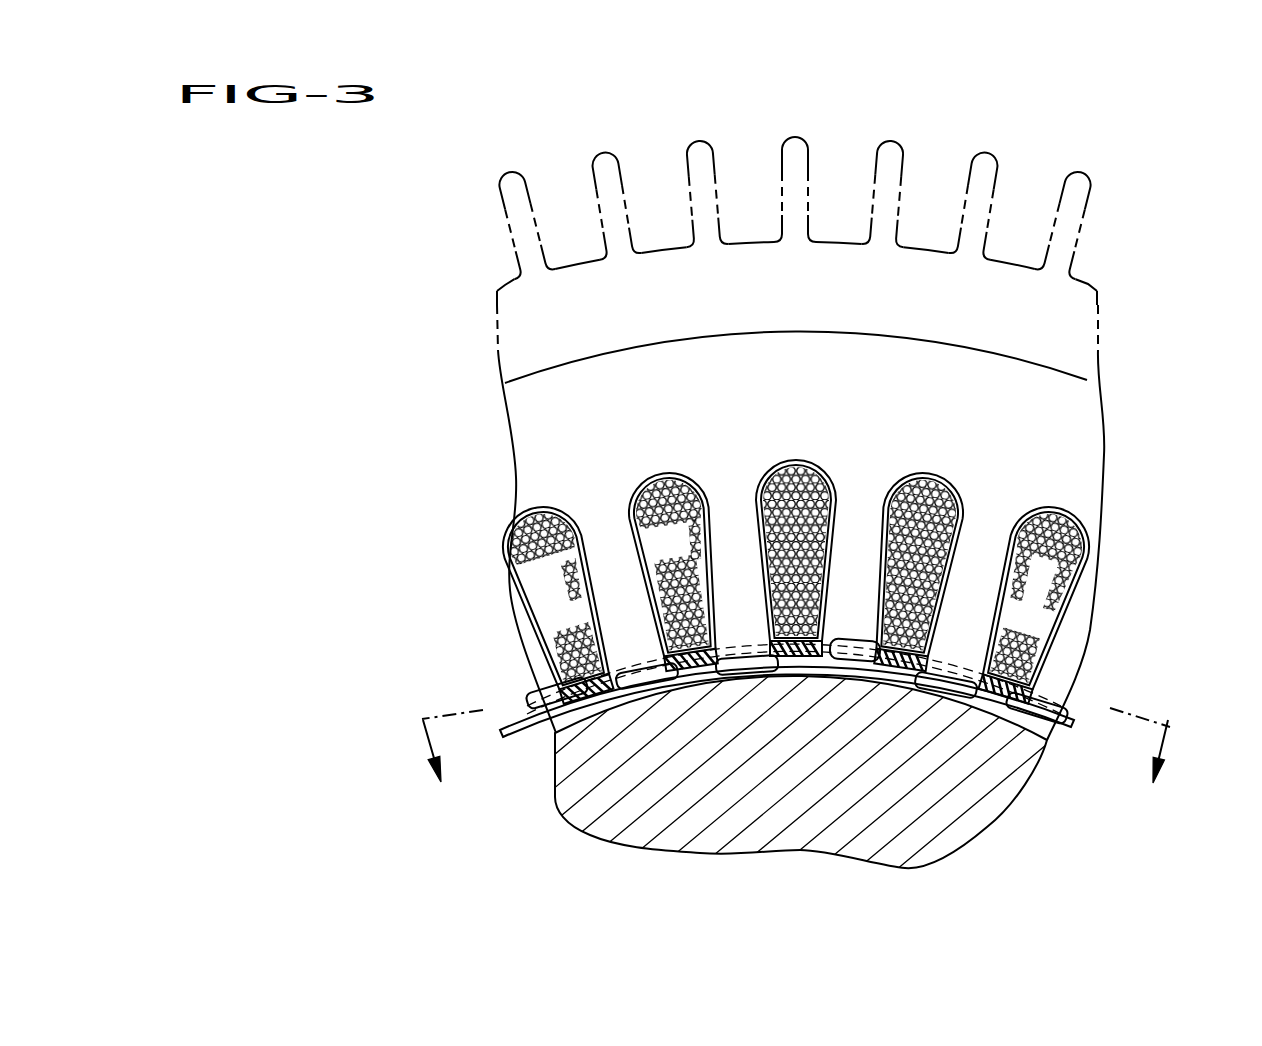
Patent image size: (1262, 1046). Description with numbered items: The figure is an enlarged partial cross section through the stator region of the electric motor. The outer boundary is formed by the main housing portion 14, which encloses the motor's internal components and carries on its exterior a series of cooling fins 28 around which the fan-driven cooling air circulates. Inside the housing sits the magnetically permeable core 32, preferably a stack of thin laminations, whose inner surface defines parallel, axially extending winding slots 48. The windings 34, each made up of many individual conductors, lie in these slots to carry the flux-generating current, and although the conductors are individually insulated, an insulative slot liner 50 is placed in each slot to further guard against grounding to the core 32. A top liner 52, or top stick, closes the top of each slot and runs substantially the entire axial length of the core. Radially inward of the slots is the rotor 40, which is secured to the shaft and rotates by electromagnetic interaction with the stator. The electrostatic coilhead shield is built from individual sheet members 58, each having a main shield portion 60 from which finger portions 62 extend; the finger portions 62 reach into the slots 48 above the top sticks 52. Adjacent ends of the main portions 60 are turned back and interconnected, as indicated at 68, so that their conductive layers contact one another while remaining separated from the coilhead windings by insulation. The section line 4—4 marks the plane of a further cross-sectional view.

The section line 4- 4 is at (794, 733).
The main housing portion 14 is at (1087, 283).
The cooling fins 28 is at (606, 150).
The magnetically permeable core 32 is at (1078, 444).
The longitudinal windings 34 is at (535, 512).
The rotor 40 is at (1023, 767).
The winding slots 48 is at (553, 663).
The insulative slot liner 50 is at (590, 620).
The top liner 52 is at (617, 686).
The sheet member 58 is at (958, 668).
The main shield portion 60 is at (752, 655).
The finger portions 62 is at (608, 712).
The interconnection of turned-back ends 68 is at (852, 640).